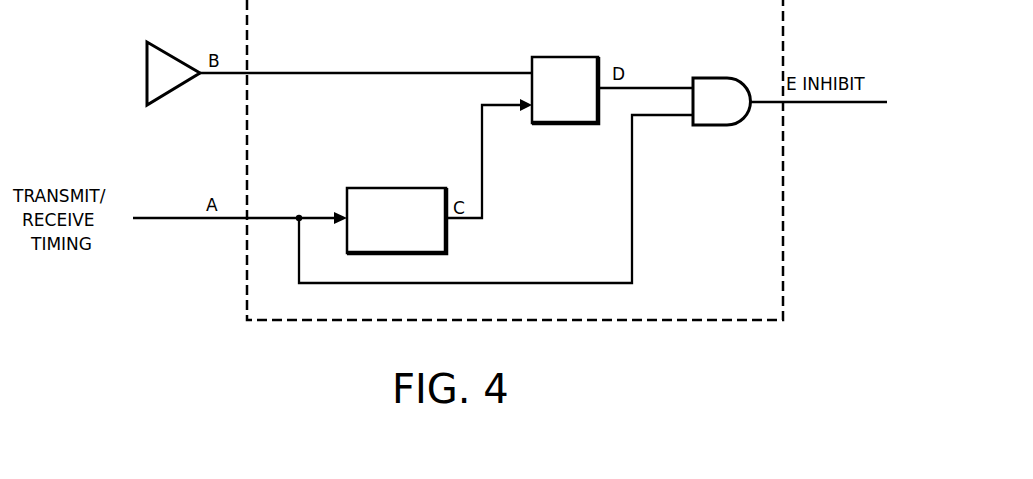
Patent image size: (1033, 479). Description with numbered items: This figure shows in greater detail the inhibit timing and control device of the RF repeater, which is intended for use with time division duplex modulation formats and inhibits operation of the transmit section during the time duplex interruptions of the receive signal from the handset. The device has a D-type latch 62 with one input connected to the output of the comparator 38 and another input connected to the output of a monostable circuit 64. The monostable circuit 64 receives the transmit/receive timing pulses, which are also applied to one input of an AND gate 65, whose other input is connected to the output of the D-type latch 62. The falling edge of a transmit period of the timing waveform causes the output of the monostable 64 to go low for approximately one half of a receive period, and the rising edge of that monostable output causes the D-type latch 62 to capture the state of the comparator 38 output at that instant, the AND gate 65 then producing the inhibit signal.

The comparator 38 is at (166, 50).
The D-type latch 62 is at (568, 124).
The monostable circuit 64 is at (416, 188).
The AND gate 65 is at (728, 126).